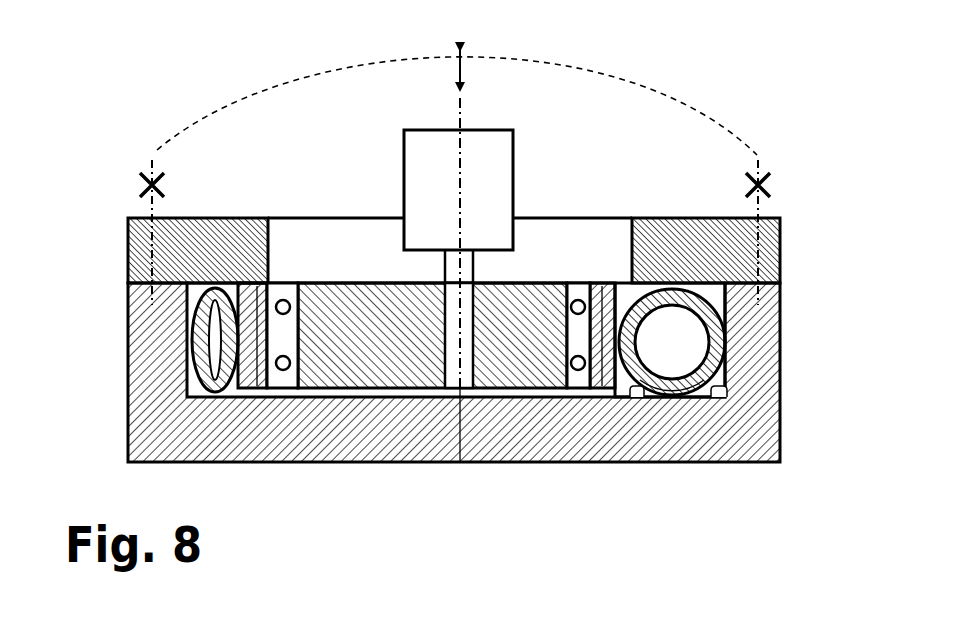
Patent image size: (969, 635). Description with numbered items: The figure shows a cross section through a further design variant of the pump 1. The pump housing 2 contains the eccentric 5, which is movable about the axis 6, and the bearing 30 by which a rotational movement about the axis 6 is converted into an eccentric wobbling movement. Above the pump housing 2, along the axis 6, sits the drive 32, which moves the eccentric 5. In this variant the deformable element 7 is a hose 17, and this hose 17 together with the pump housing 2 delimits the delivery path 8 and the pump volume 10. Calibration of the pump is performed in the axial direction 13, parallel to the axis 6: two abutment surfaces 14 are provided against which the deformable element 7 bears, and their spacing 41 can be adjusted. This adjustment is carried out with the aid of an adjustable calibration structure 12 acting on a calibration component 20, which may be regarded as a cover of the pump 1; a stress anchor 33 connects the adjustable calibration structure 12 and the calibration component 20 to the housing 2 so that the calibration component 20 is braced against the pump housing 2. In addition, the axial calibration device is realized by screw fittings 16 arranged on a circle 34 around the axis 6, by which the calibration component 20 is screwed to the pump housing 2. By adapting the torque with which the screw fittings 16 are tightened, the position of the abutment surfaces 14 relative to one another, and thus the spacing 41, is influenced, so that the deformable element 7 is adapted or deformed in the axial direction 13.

The pump 1 is at (165, 113).
The pump housing 2 is at (668, 462).
The eccentric 5 is at (527, 390).
The axis 6 is at (460, 462).
The deformable element 7 is at (603, 385).
The delivery path 8 is at (667, 330).
The pump volume 10 is at (665, 358).
The adjustable calibration structure 12 is at (775, 170).
The axial direction 13 is at (455, 70).
The abutment surfaces 14 is at (618, 382).
The screw fittings 16 is at (760, 175).
The hose 17 is at (688, 396).
The calibration component 20 is at (128, 250).
The bearing 30 is at (283, 372).
The drive 32 is at (515, 130).
The stress anchor 33 is at (475, 271).
The circle 34 is at (672, 90).
The spacing 41 is at (190, 355).